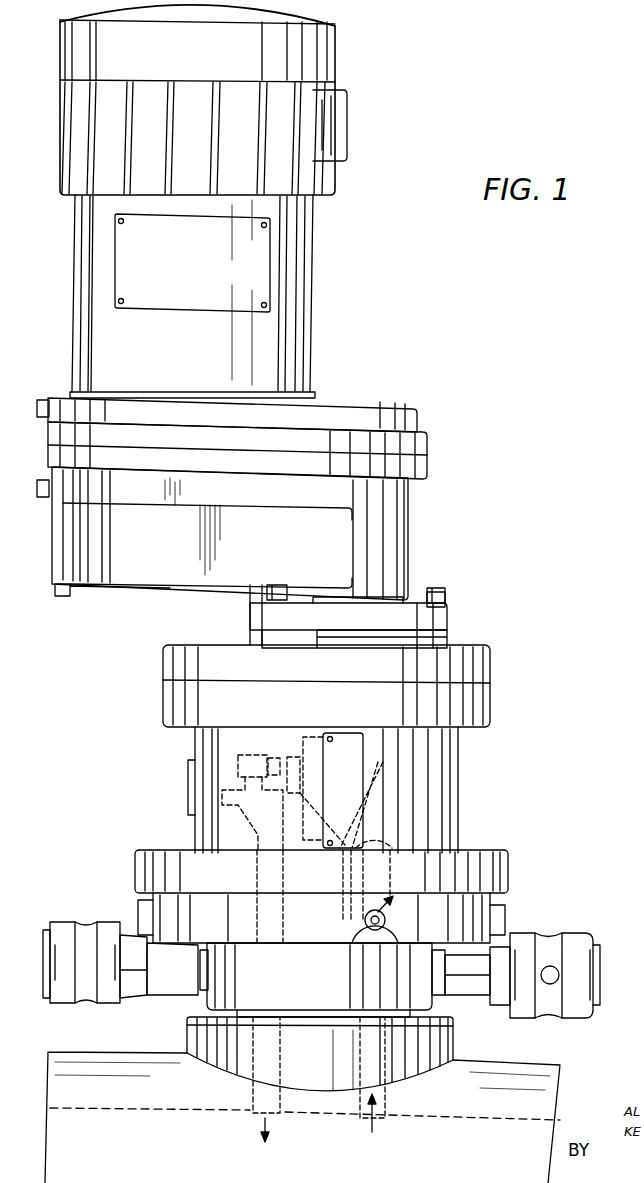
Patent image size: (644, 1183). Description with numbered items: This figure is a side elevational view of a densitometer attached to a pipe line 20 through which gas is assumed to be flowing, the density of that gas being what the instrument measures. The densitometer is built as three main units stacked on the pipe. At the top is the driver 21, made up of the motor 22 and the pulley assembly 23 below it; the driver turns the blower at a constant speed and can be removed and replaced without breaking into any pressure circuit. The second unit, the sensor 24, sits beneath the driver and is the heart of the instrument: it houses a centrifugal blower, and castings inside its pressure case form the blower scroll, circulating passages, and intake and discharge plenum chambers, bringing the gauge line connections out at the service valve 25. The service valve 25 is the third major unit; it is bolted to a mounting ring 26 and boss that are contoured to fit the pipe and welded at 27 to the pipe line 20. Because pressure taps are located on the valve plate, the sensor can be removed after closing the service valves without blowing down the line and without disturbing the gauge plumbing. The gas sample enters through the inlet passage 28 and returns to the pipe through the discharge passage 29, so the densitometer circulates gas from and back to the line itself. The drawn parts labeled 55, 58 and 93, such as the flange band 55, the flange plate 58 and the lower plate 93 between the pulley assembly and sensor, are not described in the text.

The pipe line 20 is at (527, 1067).
The driver 21 is at (466, 422).
The motor 22 is at (307, 280).
The pulley assembly 23 is at (403, 532).
The sensor 24 is at (506, 756).
The service valve 25 is at (570, 920).
The mounting ring 26 is at (453, 1045).
The weld 27 is at (413, 1082).
The inlet passage 28 is at (380, 1120).
The discharge passage 29 is at (277, 1118).
The flange band 55 is at (427, 445).
The upper flange plate 58 is at (447, 617).
The lower plate 93 is at (447, 640).